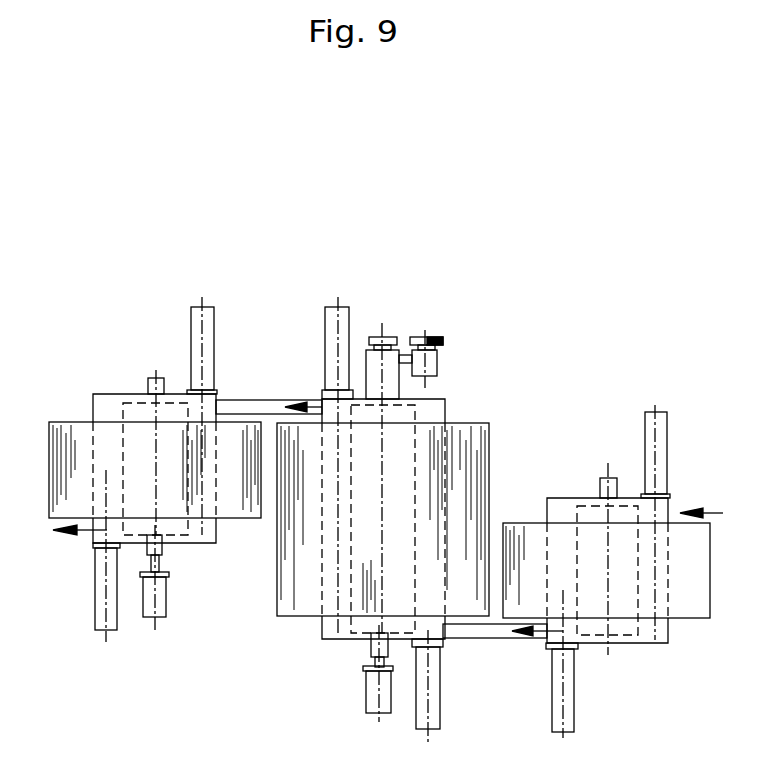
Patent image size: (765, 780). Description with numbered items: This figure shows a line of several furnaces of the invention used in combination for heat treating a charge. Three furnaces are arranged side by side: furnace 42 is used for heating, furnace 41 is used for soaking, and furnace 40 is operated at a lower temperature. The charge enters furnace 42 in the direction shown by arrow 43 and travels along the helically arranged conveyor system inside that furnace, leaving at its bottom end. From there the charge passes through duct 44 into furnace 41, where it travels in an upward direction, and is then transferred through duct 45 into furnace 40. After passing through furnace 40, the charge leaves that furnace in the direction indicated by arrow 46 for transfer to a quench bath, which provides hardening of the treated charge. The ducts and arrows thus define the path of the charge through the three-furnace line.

The furnace 40 is at (72, 430).
The furnace 41 is at (293, 570).
The furnace 42 is at (522, 547).
The arrow 43 is at (717, 503).
The duct 44 is at (478, 637).
The duct 45 is at (257, 402).
The arrow 46 is at (67, 539).